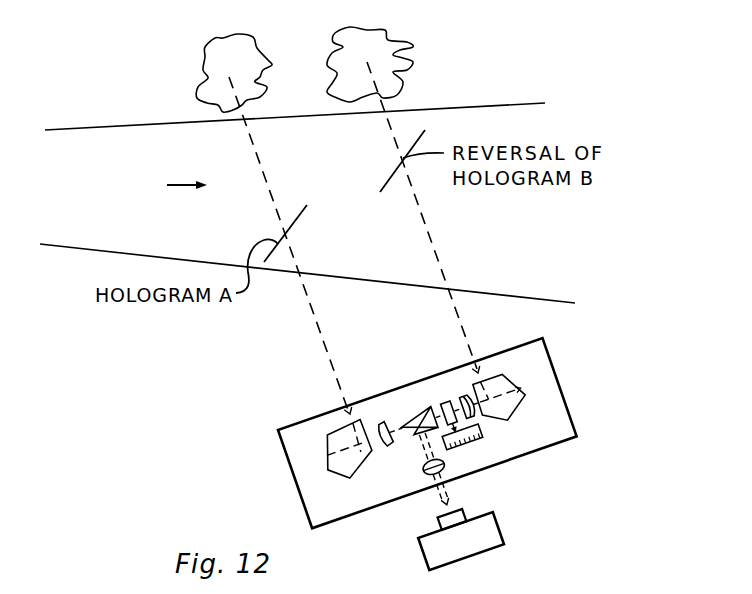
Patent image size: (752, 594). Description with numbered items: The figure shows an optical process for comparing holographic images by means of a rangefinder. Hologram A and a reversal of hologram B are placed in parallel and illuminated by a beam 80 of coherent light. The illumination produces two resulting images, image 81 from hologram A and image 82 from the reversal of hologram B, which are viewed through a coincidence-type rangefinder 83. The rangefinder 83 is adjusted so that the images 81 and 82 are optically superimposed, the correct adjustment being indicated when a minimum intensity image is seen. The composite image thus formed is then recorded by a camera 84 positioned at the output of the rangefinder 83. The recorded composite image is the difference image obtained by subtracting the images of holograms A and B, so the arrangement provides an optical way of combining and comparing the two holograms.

The beam of coherent light 80 is at (307, 203).
The image 81 is at (207, 73).
The image 82 is at (400, 68).
The coincidence-type rangefinder 83 is at (302, 472).
The camera 84 is at (488, 532).